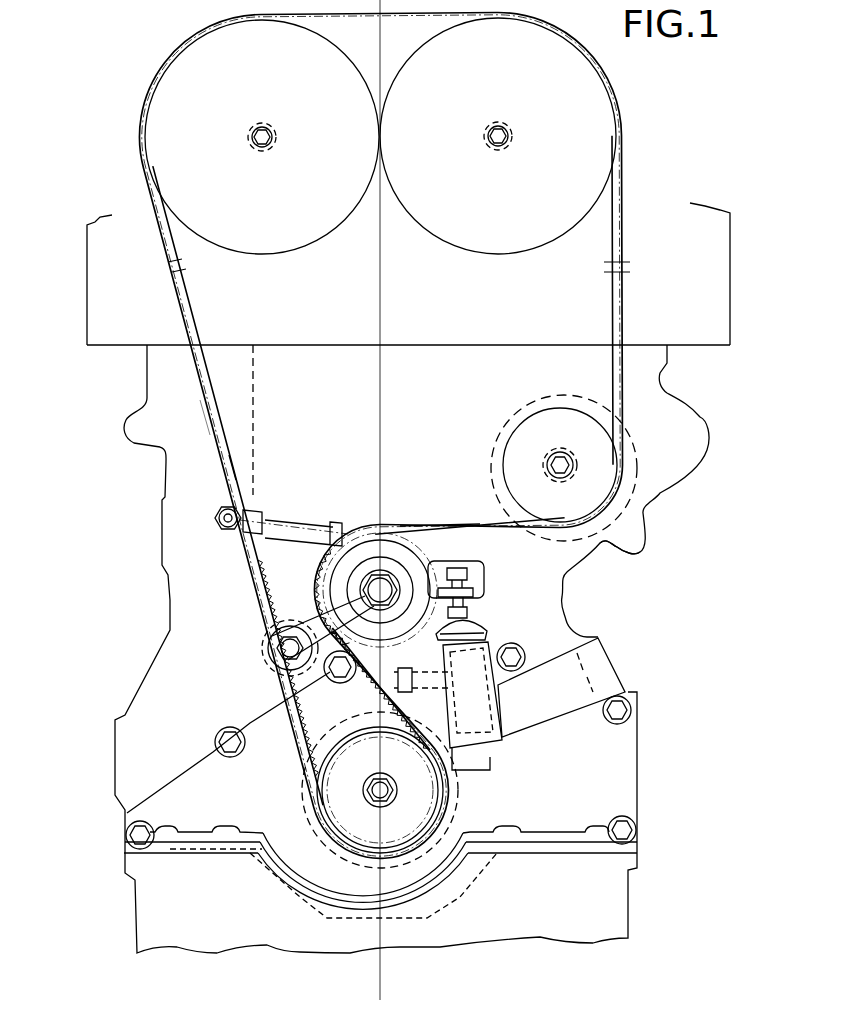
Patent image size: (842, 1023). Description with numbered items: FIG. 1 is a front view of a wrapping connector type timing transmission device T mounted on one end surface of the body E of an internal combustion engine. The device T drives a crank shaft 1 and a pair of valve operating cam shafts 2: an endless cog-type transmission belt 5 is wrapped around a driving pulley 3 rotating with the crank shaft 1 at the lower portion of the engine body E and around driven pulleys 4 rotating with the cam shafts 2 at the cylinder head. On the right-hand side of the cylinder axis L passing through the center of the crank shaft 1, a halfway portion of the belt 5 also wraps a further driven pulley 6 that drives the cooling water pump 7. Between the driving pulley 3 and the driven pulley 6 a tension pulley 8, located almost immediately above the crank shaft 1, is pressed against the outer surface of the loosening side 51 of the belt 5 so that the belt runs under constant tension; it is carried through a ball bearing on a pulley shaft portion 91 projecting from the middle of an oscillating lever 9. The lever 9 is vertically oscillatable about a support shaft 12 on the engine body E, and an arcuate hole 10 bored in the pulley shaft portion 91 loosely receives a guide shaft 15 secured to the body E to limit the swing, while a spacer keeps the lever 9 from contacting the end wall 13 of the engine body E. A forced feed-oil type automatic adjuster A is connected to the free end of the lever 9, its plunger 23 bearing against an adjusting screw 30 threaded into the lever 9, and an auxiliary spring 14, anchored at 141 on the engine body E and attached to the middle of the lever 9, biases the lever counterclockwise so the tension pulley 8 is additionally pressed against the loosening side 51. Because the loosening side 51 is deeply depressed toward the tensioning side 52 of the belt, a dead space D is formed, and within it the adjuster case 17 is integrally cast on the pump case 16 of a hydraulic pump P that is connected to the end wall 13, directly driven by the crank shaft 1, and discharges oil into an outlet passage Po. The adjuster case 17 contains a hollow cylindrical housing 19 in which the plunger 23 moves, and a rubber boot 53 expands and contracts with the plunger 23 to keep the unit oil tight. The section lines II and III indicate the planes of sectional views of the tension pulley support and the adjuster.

The crank shaft 1 is at (392, 791).
The valve operating cam shafts 2 is at (268, 137).
The driving pulley 3 is at (352, 826).
The driven pulleys 4 is at (346, 78).
The transmission belt 5 is at (188, 307).
The loosening side of the transmission belt 51 is at (428, 524).
The tensioning side of the transmission belt 52 is at (232, 467).
The driven pulley 6 is at (541, 412).
The cooling water pump 7 is at (626, 462).
The tension pulley 8 is at (418, 556).
The oscillating lever 9 is at (293, 626).
The pulley shaft portion 91 is at (360, 598).
The arcuate hole 10 is at (395, 597).
The support shaft 12 is at (298, 628).
The end wall 13 is at (232, 627).
The auxiliary spring 14 is at (338, 524).
The base end support of the auxiliary spring 141 is at (216, 518).
The guide shaft 15 is at (354, 604).
The pump case 16 is at (466, 798).
The adjuster case 17 is at (434, 696).
The housing 19 is at (492, 704).
The plunger 23 is at (488, 633).
The adjusting screw 30 is at (456, 567).
The boot 53 is at (468, 612).
The engine body E is at (85, 306).
The wrapping connector type timing transmission device T is at (207, 405).
The dead space D is at (589, 563).
The forced feed-oil type automatic adjuster A is at (488, 624).
The outlet passage Po is at (614, 652).
The section line II is at (662, 677).
The section line III is at (257, 665).
The axis of the engine cylinder L is at (376, 500).
The hydraulic pump P is at (399, 870).